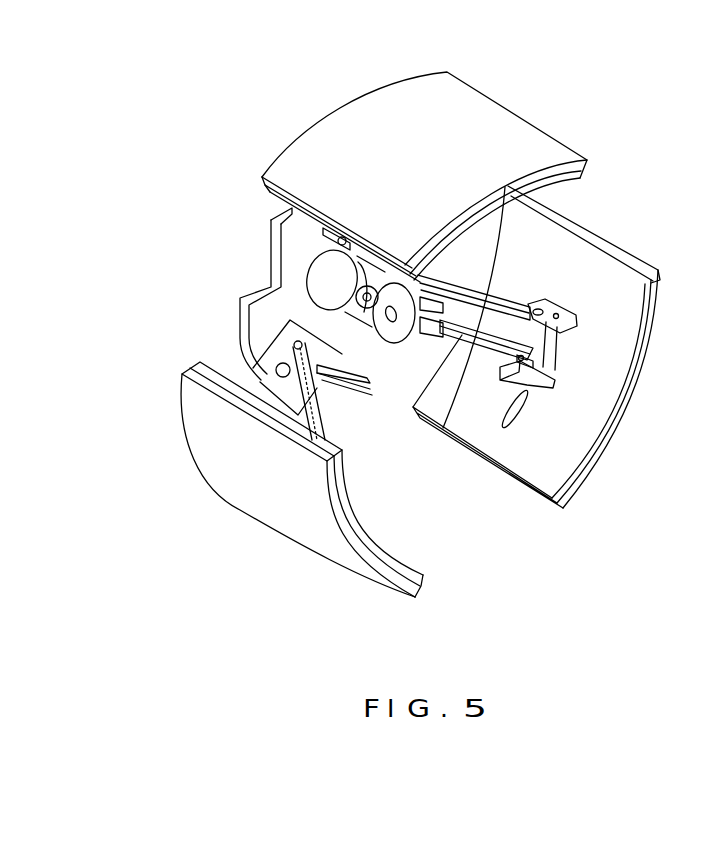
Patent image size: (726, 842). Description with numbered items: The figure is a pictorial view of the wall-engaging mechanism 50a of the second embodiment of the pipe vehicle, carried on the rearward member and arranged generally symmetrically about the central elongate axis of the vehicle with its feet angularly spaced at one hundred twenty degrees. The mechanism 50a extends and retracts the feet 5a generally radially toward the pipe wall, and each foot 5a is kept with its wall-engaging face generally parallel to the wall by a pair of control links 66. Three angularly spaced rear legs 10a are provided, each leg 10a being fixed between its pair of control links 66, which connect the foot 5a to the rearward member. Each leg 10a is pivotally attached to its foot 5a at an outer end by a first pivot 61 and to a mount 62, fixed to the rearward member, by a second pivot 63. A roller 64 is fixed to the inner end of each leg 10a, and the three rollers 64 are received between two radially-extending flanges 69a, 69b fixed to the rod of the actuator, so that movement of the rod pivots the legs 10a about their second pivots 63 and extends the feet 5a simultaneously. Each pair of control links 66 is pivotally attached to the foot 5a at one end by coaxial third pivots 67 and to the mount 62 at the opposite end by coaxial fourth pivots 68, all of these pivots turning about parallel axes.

The foot 5a is at (348, 118).
The rear leg 10a is at (550, 340).
The wall-engaging mechanism 50a is at (387, 423).
The first pivot 61 is at (557, 317).
The mount 62 is at (348, 375).
The second pivot 63 is at (287, 400).
The roller 64 is at (263, 297).
The control link 66 is at (507, 303).
The third pivot 67 is at (545, 316).
The fourth pivot 68 is at (294, 346).
The radially-extending flange 69a is at (345, 298).
The radially-extending flange 69b is at (395, 335).